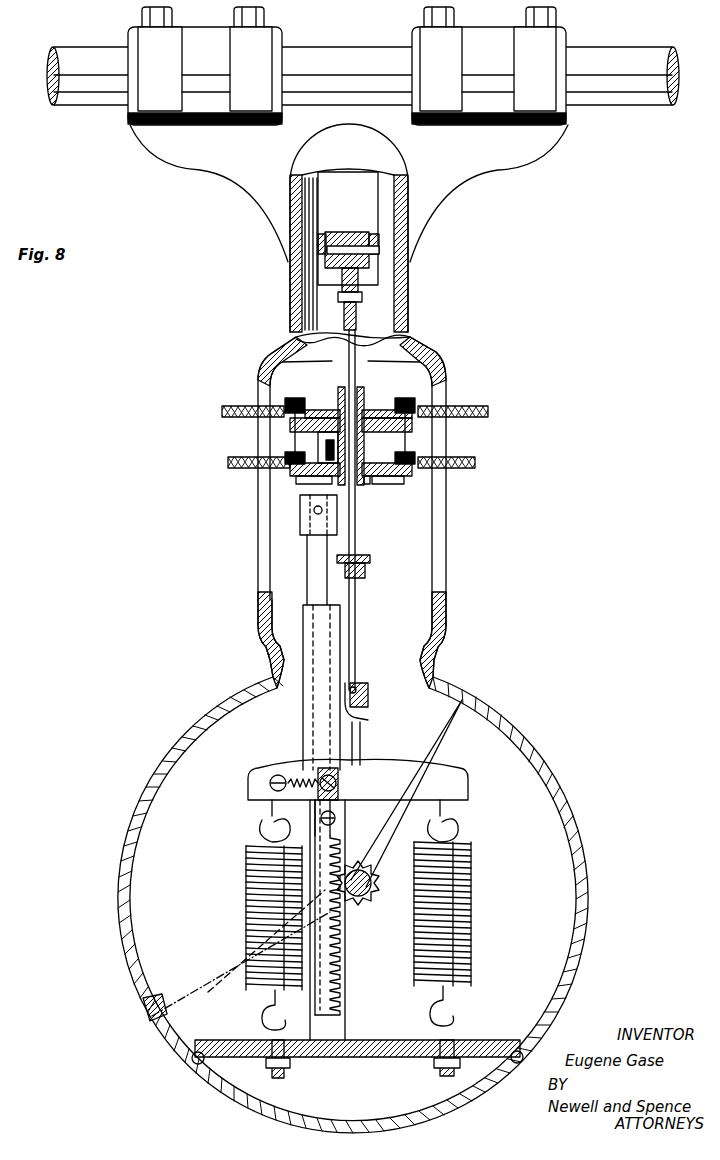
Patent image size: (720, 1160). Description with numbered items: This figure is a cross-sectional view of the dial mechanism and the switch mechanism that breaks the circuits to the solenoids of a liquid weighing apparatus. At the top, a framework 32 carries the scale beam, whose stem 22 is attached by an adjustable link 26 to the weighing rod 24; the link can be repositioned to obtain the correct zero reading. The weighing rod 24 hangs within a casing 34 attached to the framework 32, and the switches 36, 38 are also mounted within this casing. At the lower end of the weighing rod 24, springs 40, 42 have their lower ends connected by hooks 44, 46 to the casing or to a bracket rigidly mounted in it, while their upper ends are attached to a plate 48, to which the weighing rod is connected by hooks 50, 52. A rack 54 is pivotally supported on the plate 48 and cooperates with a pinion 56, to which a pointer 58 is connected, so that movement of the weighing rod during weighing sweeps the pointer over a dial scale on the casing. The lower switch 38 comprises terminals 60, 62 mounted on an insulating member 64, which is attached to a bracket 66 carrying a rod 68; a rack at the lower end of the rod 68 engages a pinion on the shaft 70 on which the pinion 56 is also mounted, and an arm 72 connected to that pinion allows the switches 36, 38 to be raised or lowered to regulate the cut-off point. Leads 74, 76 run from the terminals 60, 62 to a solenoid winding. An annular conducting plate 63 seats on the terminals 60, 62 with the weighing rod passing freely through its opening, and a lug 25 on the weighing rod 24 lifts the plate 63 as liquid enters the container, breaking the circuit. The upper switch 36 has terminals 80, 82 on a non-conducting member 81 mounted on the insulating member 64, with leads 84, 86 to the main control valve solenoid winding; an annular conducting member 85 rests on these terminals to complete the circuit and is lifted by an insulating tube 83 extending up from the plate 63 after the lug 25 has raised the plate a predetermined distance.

The framework 32 is at (355, 58).
The casing 34 is at (409, 318).
The stem of the scale beam 22 is at (347, 228).
The link 26 is at (372, 302).
The weighing rod 24 is at (353, 338).
The conducting member 85 is at (379, 408).
The lead 84 is at (240, 406).
The lead 86 is at (465, 406).
The lead 74 is at (240, 470).
The lead 76 is at (460, 470).
The terminal 80 is at (290, 425).
The non-conducting member 81 is at (300, 438).
The tube 83 is at (335, 441).
The conducting plate 63 is at (329, 451).
The terminal 82 is at (412, 422).
The upper switch 36 is at (413, 435).
The lower switch 38 is at (411, 471).
The terminal 62 is at (395, 480).
The insulating member 64 is at (400, 484).
The terminal 60 is at (312, 498).
The bracket 66 is at (301, 521).
The rod 68 is at (316, 575).
The lug 25 is at (370, 562).
The hook 52 is at (368, 720).
The hook 50 is at (360, 748).
The plate 48 is at (390, 769).
The rack 54 is at (340, 843).
The pinion 56 is at (371, 906).
The shaft 70 is at (372, 886).
The pointer 58 is at (432, 752).
The spring 40 is at (246, 880).
The spring 42 is at (472, 897).
The hook 44 is at (264, 1020).
The hook 46 is at (458, 1020).
The arm 72 is at (210, 960).